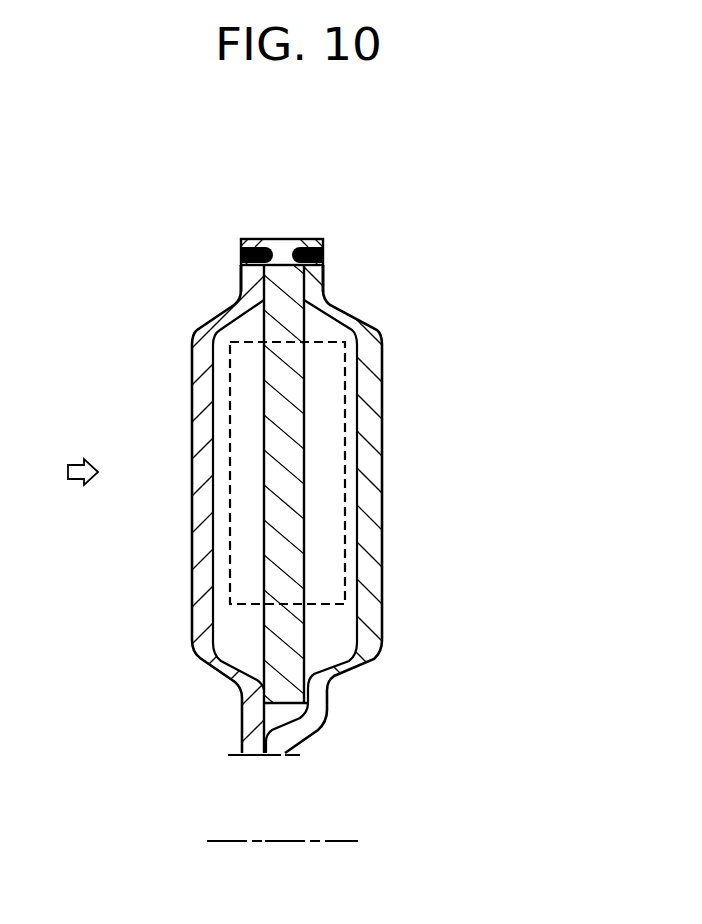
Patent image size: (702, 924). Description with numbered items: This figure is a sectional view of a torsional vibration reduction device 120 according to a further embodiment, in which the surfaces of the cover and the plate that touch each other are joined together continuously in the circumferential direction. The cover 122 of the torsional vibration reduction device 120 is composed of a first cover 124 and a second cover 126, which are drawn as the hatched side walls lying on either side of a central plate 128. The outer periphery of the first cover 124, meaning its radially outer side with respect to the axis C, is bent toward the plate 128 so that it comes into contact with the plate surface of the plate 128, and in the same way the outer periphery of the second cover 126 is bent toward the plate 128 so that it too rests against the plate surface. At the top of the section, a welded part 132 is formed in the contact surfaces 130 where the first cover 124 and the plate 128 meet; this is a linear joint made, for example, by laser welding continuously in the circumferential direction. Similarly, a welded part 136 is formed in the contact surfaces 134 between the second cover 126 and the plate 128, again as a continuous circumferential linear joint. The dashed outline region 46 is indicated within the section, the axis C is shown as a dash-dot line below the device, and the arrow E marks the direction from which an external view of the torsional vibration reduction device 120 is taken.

The torsional vibration reduction device 120 is at (350, 462).
The cover 122 is at (302, 231).
The first cover 124 is at (187, 470).
The second cover 126 is at (395, 513).
The plate 128 is at (286, 578).
The contact surfaces 130 is at (245, 272).
The welded part 132 is at (243, 257).
The contact surfaces 134 is at (361, 252).
The welded part 136 is at (322, 258).
The region 46 is at (245, 545).
The arrow E is at (71, 472).
The axis C is at (300, 841).